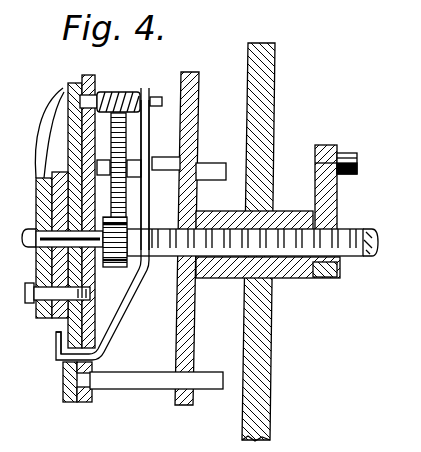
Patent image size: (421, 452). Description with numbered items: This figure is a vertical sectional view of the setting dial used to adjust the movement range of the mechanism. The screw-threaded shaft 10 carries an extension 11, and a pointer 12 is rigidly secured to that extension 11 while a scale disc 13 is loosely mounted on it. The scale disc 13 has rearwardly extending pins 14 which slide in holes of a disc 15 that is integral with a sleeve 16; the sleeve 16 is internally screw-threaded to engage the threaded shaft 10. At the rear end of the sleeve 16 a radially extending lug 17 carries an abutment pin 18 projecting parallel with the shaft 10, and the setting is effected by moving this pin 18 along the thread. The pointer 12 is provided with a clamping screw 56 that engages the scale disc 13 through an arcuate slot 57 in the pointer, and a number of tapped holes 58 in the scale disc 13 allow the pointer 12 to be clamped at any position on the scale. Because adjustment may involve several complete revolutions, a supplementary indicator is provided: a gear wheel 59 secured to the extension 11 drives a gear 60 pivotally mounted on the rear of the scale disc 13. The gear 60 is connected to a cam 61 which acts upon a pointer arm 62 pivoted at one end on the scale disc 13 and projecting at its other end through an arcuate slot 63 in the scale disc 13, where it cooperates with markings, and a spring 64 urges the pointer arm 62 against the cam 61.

The screw-threaded shaft 10 is at (363, 237).
The extension 11 is at (36, 254).
The pointer 12 is at (53, 99).
The scale disc 13 is at (84, 77).
The pins 14 is at (222, 166).
The disc 15 is at (184, 405).
The sleeve 16 is at (298, 280).
The lug 17 is at (326, 146).
The pin 18 is at (346, 154).
The clamping screw 56 is at (44, 307).
The arcuate slot 57 is at (53, 340).
The tapped holes 58 is at (96, 290).
The gear wheel 59 is at (132, 276).
The gear 60 is at (122, 136).
The cam 61 is at (172, 158).
The pointer arm 62 is at (57, 347).
The arcuate slot 63 is at (90, 380).
The spring 64 is at (125, 93).